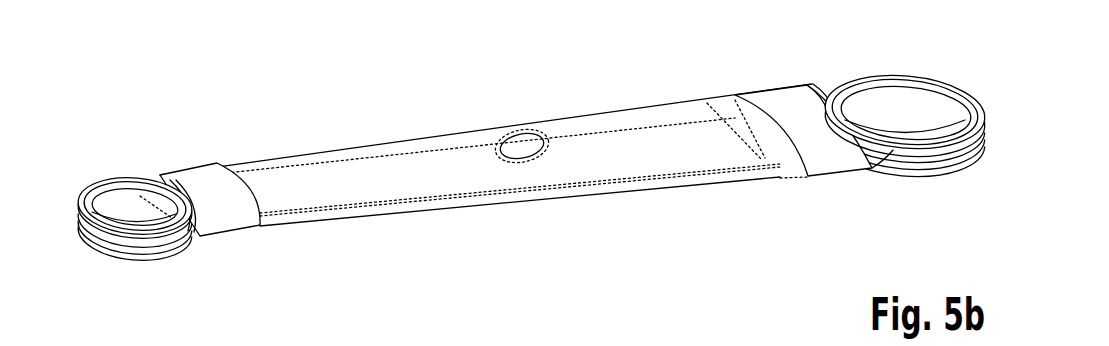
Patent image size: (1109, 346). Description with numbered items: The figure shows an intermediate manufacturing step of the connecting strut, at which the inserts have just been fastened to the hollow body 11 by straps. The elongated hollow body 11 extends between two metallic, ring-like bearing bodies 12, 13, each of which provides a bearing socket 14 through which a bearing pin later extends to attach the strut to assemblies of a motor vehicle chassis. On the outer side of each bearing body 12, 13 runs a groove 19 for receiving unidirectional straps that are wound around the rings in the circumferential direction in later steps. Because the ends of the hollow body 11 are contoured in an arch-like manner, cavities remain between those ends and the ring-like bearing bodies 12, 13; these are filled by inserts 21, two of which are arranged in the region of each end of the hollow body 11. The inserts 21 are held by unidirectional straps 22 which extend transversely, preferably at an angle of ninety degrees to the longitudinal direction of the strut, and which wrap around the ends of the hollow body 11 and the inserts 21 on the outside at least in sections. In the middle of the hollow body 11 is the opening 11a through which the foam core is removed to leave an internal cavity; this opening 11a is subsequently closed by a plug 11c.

The hollow body 11 is at (478, 112).
The opening 11a is at (523, 142).
The plug 11c is at (542, 114).
The bearing body 12 is at (110, 178).
The bearing body 13 is at (883, 78).
The bearing socket 14 is at (118, 211).
The groove 19 is at (143, 245).
The insert 21 is at (148, 175).
The unidirectional strap 22 is at (195, 176).